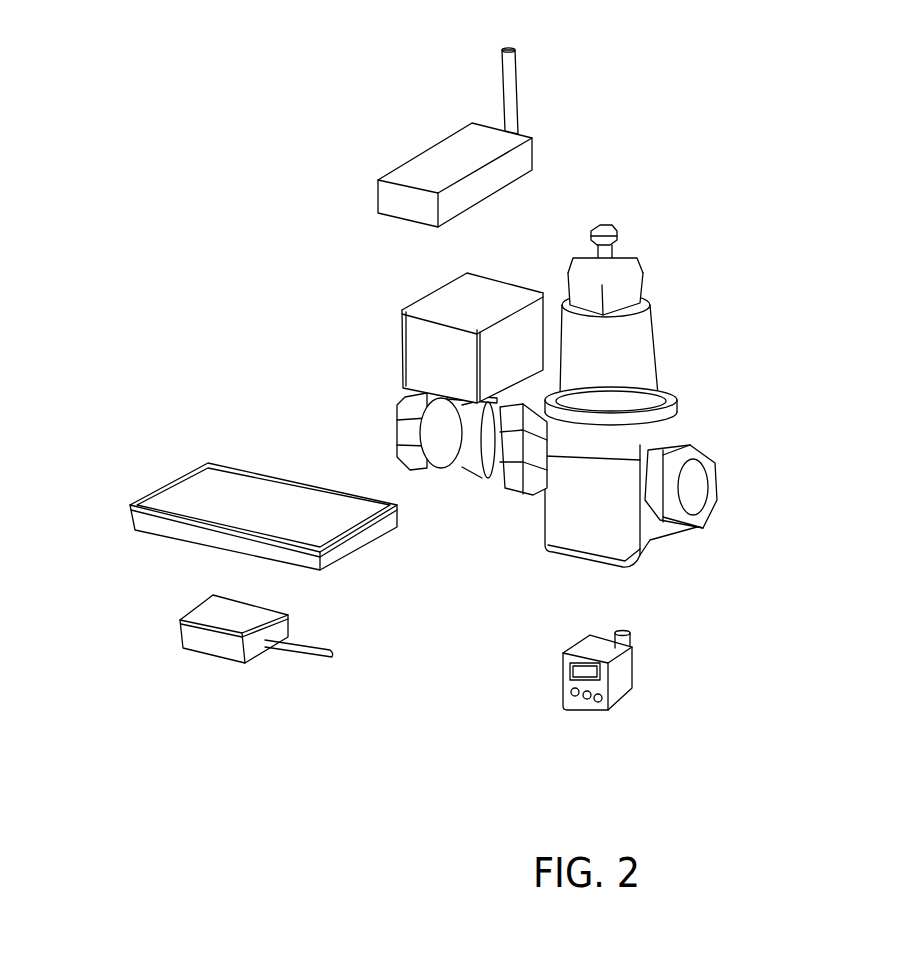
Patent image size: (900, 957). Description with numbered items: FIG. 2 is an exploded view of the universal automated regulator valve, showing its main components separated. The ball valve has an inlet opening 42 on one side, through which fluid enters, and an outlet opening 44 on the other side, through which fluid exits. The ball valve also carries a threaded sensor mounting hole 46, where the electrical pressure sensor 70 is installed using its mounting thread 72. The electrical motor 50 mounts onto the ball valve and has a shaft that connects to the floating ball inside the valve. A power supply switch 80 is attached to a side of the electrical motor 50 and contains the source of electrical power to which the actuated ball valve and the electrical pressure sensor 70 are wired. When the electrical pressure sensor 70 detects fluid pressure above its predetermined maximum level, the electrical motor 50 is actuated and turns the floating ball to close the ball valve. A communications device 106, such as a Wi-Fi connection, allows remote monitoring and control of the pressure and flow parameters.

The communications device 106 is at (437, 140).
The electrical motor 50 is at (400, 328).
The outlet opening 44 is at (400, 440).
The threaded sensor mounting hole 46 is at (503, 495).
The inlet opening 42 is at (710, 453).
The mounting thread 72 is at (630, 626).
The electrical pressure sensor 70 is at (640, 652).
The power supply switch 80 is at (177, 628).